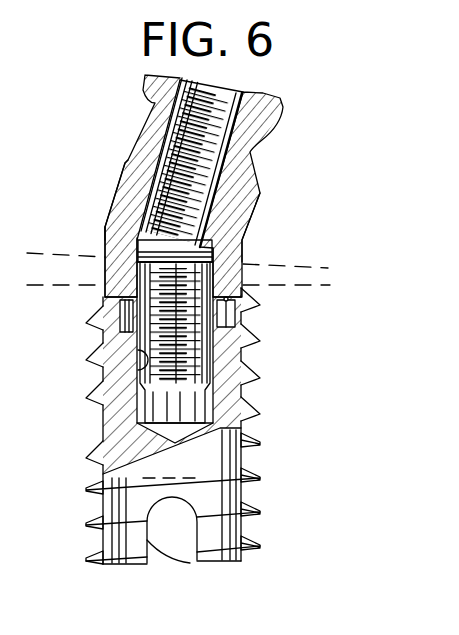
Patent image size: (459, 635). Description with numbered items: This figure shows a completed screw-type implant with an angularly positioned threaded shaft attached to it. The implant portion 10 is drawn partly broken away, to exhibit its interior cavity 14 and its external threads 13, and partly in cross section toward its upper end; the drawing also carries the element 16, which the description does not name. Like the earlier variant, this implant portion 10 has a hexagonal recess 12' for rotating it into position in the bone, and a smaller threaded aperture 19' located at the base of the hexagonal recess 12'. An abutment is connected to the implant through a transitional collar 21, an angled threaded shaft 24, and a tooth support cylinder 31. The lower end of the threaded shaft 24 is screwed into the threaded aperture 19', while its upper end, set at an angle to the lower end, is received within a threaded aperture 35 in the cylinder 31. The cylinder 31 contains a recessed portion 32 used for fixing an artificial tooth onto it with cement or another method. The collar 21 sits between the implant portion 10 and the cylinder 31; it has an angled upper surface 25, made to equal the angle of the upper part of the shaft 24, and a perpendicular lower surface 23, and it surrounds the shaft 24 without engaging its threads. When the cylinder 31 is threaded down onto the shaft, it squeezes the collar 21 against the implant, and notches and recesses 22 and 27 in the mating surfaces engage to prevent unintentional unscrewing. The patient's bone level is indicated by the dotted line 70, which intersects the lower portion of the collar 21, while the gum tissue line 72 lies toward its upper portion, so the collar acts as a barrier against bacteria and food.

The implant portion 10 is at (280, 466).
The hexagonal recess 12' is at (136, 330).
The threads 13 is at (260, 367).
The interior cavity 14 is at (93, 537).
The apical opening 16 is at (147, 530).
The threaded aperture 19' is at (91, 372).
The transitional collar 21 is at (100, 246).
The notches and recesses 22 is at (100, 297).
The perpendicular lower surface 23 is at (248, 305).
The angled threaded shaft 24 is at (230, 188).
The angled upper surface 25 is at (241, 248).
The notches and recesses 27 is at (127, 224).
The tooth support cylinder 31 is at (277, 112).
The recessed portion 32 is at (152, 133).
The threaded aperture 35 is at (160, 179).
The bone level line 70 is at (327, 288).
The gum tissue line 72 is at (326, 268).